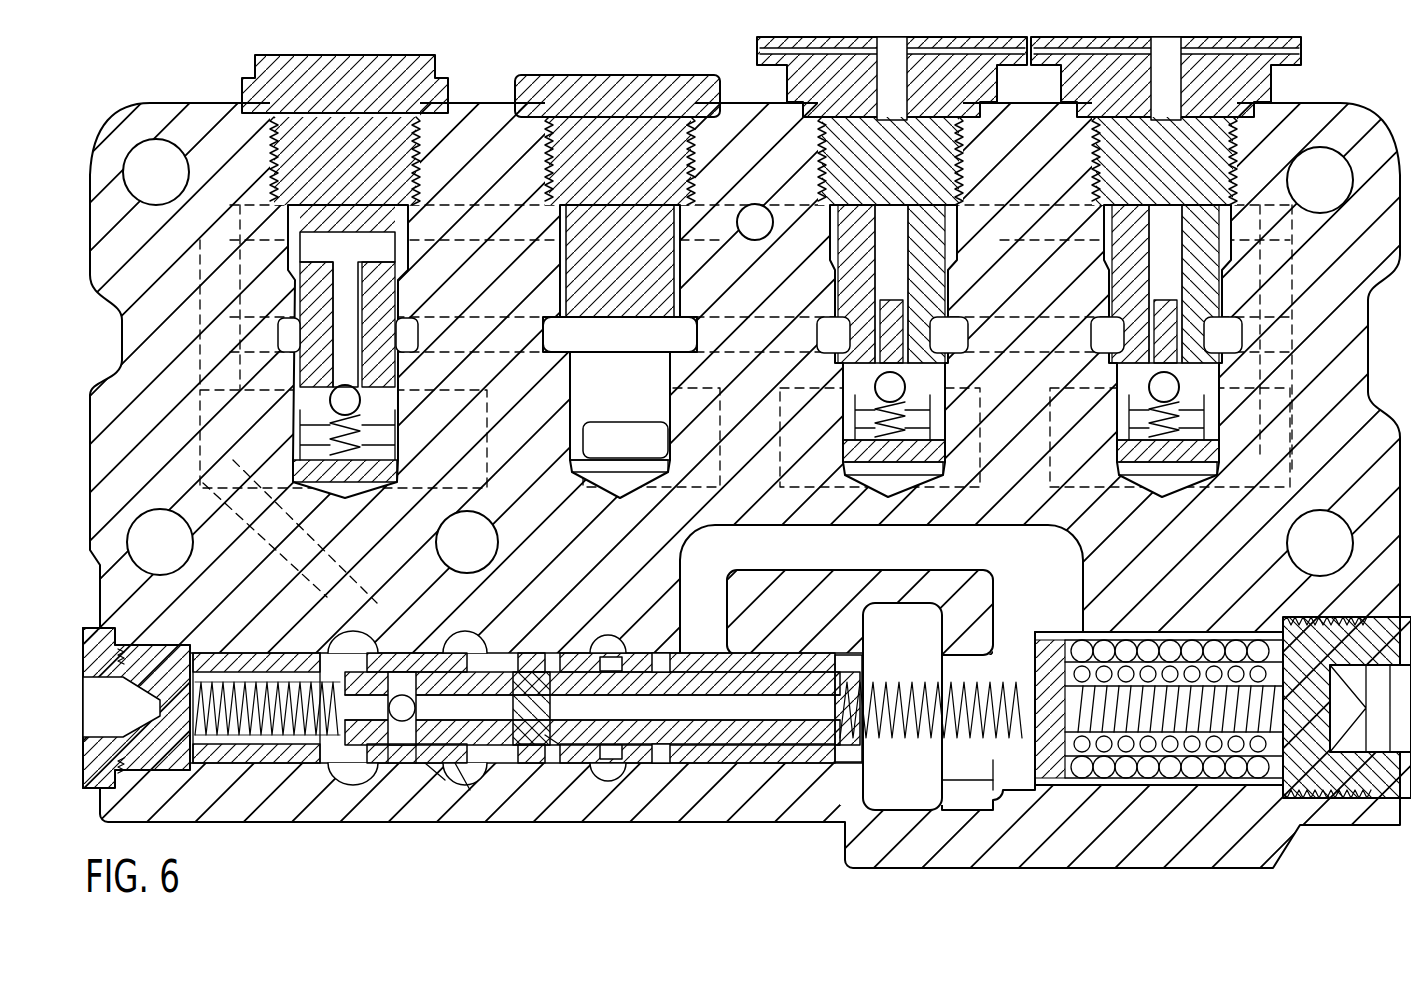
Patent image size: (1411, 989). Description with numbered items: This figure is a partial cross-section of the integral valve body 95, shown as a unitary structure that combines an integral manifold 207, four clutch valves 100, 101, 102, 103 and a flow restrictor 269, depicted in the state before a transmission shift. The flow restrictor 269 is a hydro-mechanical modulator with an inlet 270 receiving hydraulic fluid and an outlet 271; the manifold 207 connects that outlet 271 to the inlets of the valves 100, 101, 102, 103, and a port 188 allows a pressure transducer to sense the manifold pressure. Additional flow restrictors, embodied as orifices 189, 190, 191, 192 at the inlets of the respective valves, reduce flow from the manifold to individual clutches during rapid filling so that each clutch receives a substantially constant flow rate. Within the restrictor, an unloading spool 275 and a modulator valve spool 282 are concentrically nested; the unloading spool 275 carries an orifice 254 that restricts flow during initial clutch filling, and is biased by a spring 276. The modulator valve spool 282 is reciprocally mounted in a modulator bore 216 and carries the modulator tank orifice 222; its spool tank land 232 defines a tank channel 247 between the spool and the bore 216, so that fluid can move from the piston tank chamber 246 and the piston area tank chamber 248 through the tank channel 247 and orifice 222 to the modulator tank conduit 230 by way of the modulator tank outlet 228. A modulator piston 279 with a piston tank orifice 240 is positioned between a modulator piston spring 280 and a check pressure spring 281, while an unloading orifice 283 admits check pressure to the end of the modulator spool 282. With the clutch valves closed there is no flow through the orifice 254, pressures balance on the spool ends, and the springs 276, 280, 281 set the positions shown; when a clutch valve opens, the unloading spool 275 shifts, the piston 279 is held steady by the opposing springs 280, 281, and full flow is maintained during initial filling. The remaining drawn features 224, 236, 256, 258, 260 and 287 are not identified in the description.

The valve body 95 is at (86, 217).
The valve 100 is at (370, 276).
The valve 101 is at (637, 286).
The valve 102 is at (899, 267).
The valve 103 is at (1166, 267).
The port 188 is at (760, 232).
The orifice 189 is at (395, 185).
The orifice 190 is at (640, 192).
The orifice 191 is at (925, 190).
The orifice 192 is at (1210, 178).
The manifold 207 is at (302, 565).
The modulator bore 216 is at (230, 652).
The modulator tank orifice 222 is at (602, 675).
The spool land 224 is at (500, 650).
The modulator tank outlet 228 is at (630, 660).
The modulator tank conduit 230 is at (545, 652).
The spool tank land 232 is at (715, 655).
The ball cage 236 is at (1159, 708).
The piston tank orifice 240 is at (1152, 632).
The piston tank chamber 246 is at (922, 795).
The tank channel 247 is at (822, 652).
The piston area tank chamber 248 is at (1052, 585).
The orifice 254 is at (500, 704).
The passage 256 is at (405, 745).
The groove 258 is at (548, 745).
The port 260 is at (655, 655).
The flow restrictor 269 is at (450, 613).
The inlet 270 is at (465, 772).
The outlet 271 is at (322, 655).
The spool 275 is at (740, 763).
The spring 276 is at (222, 735).
The modulator piston 279 is at (1003, 800).
The modulator piston spring 280 is at (1238, 760).
The check pressure spring 281 is at (898, 682).
The modulator valve spool 282 is at (432, 765).
The unloading orifice 283 is at (833, 708).
The passage 287 is at (370, 650).